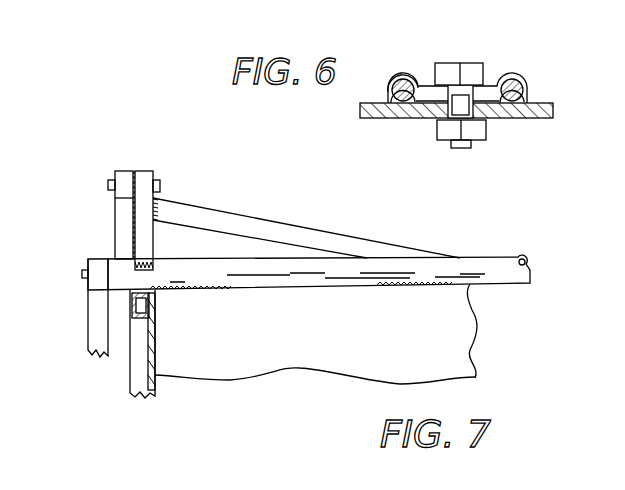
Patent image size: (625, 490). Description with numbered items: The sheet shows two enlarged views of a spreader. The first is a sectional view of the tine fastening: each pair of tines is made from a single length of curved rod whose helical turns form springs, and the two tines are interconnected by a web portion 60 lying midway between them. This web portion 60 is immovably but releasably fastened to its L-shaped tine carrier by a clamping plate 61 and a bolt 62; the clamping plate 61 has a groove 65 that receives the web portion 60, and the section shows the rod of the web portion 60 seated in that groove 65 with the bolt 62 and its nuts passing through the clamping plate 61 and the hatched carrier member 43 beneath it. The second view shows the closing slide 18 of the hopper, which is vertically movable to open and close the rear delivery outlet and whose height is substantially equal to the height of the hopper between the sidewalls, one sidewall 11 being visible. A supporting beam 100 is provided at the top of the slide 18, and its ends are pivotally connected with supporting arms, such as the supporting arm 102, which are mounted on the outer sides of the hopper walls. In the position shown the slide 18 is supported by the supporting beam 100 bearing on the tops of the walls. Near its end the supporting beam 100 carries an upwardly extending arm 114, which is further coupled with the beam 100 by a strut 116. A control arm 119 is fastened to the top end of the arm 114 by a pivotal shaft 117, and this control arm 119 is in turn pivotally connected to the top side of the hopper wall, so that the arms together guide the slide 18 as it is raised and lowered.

In FIG. 7, the sidewall 11 is at (128, 385).
In FIG. 7, the closing slide 18 is at (457, 347).
In FIG. 6, the mounting plate 43 is at (530, 119).
In FIG. 6, the web portion 60 is at (525, 80).
In FIG. 6, the clamping plate 61 is at (500, 74).
In FIG. 6, the bolt 62 is at (470, 63).
In FIG. 6, the groove 65 is at (400, 75).
In FIG. 7, the supporting beam 100 is at (500, 262).
In FIG. 7, the supporting arm 102 is at (92, 310).
In FIG. 7, the upwardly extending arm 114 is at (147, 171).
In FIG. 7, the strut 116 is at (258, 225).
In FIG. 7, the pivotal shaft 117 is at (108, 188).
In FIG. 7, the control arm 119 is at (127, 171).